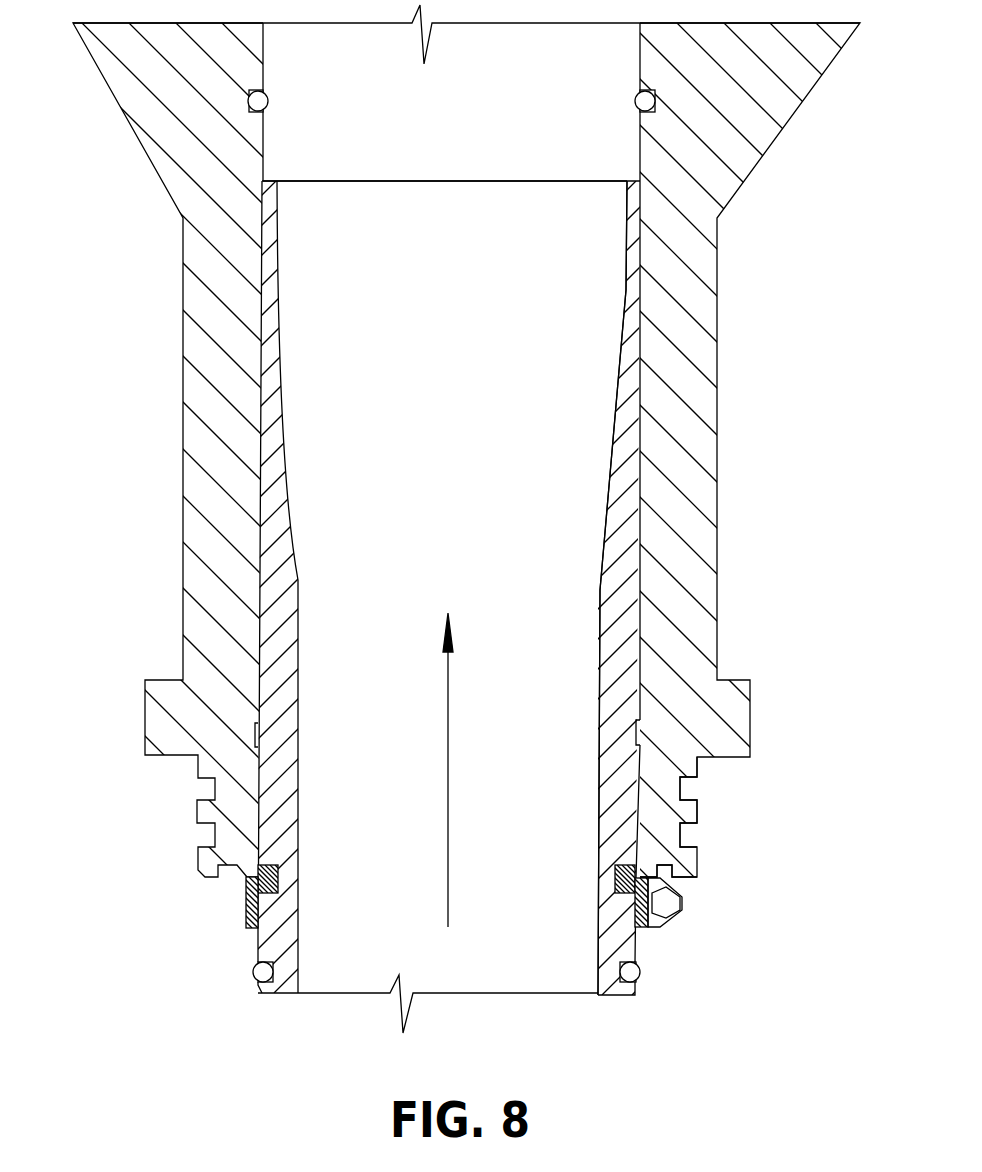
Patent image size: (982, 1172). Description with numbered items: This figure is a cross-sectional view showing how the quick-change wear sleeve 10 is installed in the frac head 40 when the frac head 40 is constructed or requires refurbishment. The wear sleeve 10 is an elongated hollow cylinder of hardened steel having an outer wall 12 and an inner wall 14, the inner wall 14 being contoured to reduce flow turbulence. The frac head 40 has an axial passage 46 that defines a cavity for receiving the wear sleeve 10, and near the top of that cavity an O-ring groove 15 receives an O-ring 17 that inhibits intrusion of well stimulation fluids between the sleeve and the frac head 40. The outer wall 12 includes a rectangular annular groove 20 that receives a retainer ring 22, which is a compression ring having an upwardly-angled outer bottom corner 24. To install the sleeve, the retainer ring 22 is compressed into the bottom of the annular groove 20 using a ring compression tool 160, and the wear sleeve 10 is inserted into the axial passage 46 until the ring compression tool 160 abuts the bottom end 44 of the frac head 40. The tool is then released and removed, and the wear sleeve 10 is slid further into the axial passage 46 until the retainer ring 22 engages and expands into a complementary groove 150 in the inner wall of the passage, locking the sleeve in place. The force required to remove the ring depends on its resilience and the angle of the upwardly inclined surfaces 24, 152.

The quick-change wear sleeve 10 is at (438, 510).
The outer wall 12 is at (637, 597).
The inner wall 14 is at (600, 568).
The O-ring groove 15 is at (248, 108).
The O-ring 17 is at (655, 102).
The annular groove 20 is at (278, 882).
The retainer ring 22 is at (620, 865).
The upwardly-angled outer bottom corner 24 is at (263, 895).
The frac head 40 is at (716, 508).
The bottom end 44 is at (692, 878).
The axial passage 46 is at (470, 143).
The complementary groove 150 is at (640, 727).
The upwardly inclined surface 152 is at (639, 740).
The ring compression tool 160 is at (700, 902).